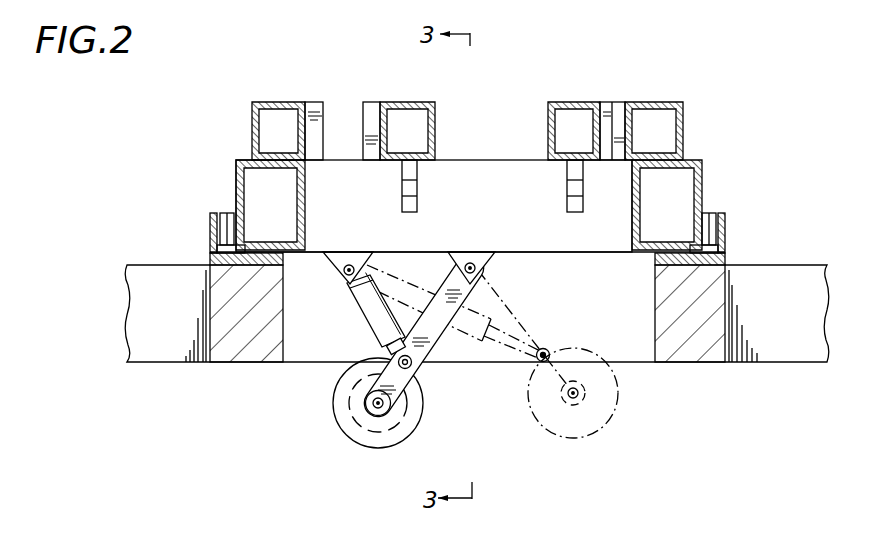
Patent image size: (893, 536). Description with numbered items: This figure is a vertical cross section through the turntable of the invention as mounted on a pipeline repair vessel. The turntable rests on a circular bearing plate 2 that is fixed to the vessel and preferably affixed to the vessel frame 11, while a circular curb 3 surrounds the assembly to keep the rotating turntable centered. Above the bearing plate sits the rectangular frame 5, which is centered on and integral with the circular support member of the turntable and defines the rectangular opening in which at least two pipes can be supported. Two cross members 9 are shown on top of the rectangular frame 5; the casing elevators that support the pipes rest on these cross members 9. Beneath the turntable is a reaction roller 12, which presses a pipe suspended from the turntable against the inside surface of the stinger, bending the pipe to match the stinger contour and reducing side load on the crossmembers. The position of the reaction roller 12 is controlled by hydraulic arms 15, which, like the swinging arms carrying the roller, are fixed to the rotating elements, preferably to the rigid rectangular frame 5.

The circular bearing plate 2 is at (705, 283).
The circular curb 3 is at (727, 222).
The rectangular frame 5 is at (700, 158).
The cross members 9 is at (385, 100).
The vessel frame 11 is at (700, 340).
The reaction roller 12 is at (371, 451).
The hydraulic arms 15 is at (357, 316).